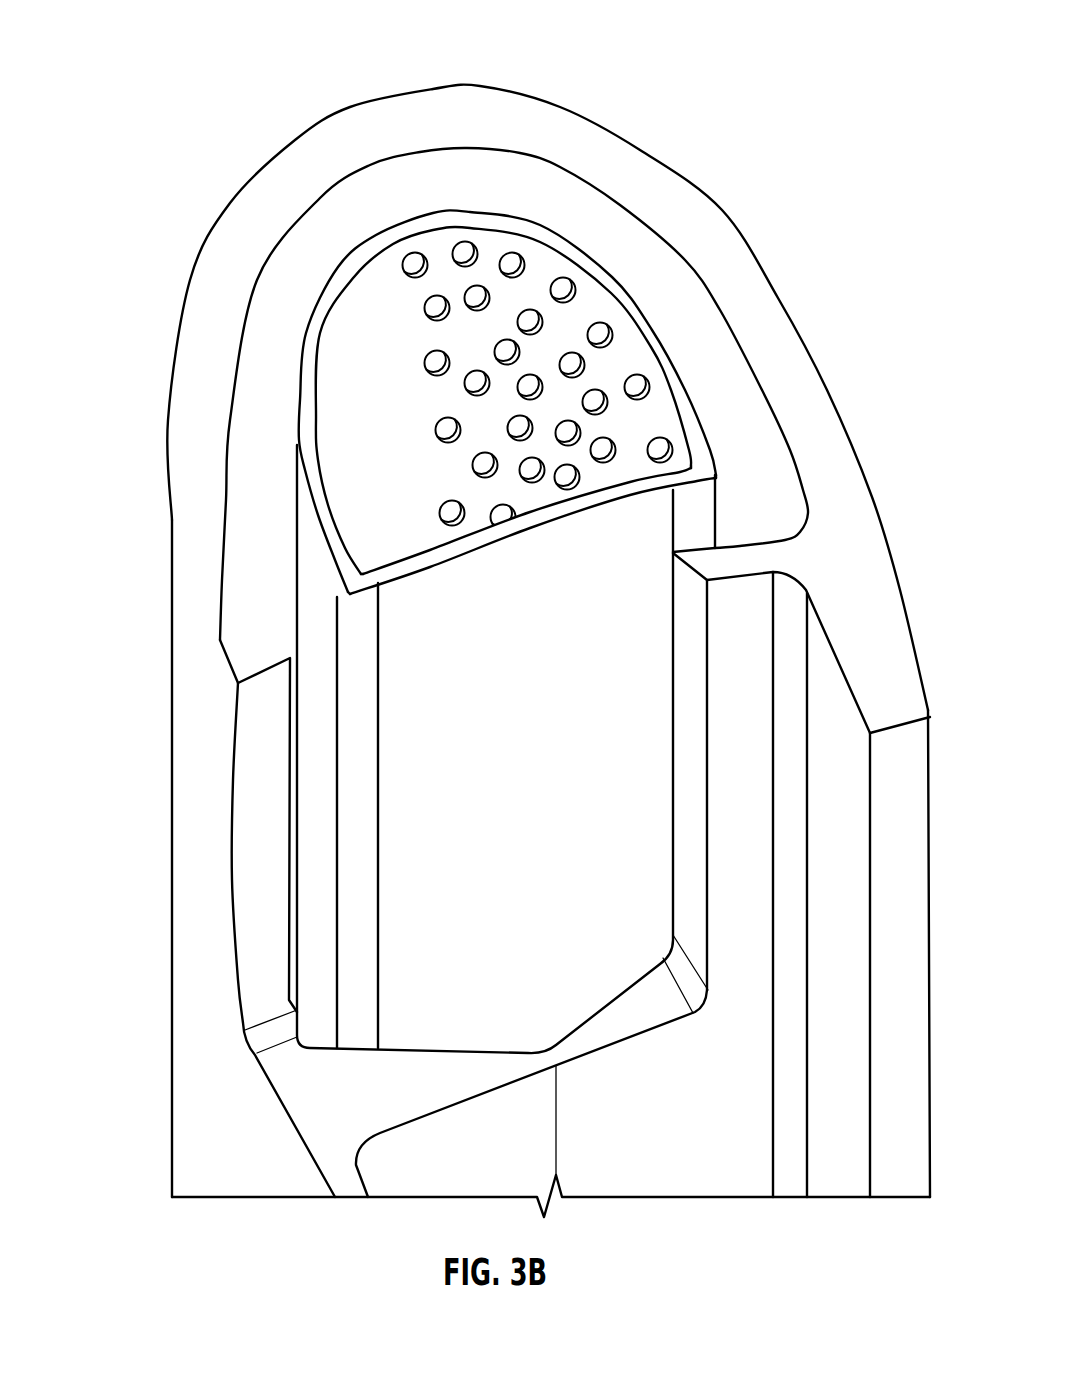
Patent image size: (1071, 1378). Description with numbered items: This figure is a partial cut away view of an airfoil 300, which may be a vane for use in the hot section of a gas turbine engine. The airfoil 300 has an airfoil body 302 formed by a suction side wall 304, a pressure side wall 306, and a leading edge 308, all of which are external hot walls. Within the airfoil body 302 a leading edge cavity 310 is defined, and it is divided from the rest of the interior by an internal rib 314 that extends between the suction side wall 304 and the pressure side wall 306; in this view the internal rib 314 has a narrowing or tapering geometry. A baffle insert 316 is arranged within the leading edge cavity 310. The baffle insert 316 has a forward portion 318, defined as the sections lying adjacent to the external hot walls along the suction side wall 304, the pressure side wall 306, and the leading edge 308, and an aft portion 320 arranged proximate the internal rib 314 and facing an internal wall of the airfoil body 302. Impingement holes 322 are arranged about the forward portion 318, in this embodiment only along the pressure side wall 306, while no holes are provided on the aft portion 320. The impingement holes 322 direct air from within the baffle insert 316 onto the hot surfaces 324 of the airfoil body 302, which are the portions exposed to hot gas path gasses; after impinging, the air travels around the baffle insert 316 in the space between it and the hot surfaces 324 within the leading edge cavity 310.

The airfoil 300 is at (141, 51).
The airfoil body 302 is at (826, 539).
The suction side wall 304 is at (186, 646).
The pressure side wall 306 is at (826, 382).
The leading edge 308 is at (385, 97).
The leading edge cavity 310 is at (266, 356).
The internal rib 314 is at (690, 851).
The baffle insert 316 is at (317, 488).
The forward portion 318 is at (468, 217).
The aft portion 320 is at (407, 558).
The impingement holes 322 is at (444, 398).
The hot surfaces 324 is at (722, 347).